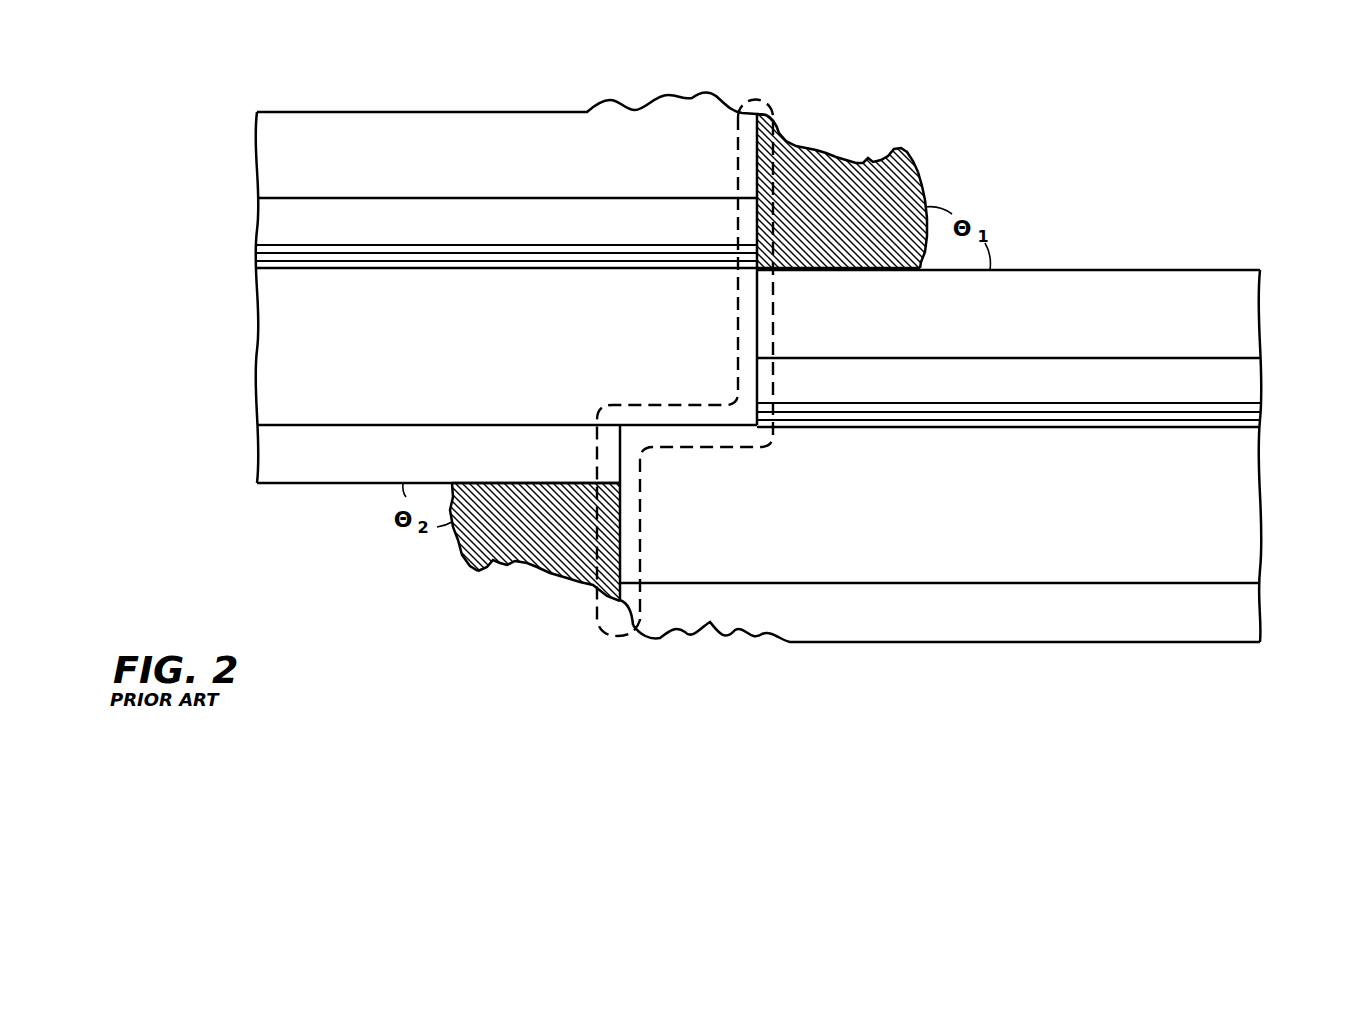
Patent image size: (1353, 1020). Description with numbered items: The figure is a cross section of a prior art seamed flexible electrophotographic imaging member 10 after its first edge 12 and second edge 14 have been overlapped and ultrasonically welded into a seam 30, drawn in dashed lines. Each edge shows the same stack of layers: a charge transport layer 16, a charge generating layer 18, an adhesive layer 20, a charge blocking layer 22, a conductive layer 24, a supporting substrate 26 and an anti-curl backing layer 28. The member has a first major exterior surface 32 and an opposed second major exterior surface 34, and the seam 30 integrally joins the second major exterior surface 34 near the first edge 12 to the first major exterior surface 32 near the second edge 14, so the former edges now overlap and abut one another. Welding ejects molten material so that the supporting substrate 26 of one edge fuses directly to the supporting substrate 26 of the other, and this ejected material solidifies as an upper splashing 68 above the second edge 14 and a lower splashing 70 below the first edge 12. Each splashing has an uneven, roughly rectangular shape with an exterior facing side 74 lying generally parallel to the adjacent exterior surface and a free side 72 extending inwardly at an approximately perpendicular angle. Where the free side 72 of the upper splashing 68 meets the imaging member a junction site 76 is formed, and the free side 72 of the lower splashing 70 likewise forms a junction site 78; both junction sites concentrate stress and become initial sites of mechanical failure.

The flexible electrophotographic imaging member 10 is at (1143, 181).
The first edge 12 is at (699, 80).
The second edge 14 is at (707, 647).
The charge transport layer 16 is at (275, 147).
The charge generating layer 18 is at (268, 212).
The adhesive layer 20 is at (258, 246).
The charge blocking layer 22 is at (258, 256).
The conductive layer 24 is at (258, 263).
The supporting substrate 26 is at (278, 345).
The anti-curl backing layer 28 is at (278, 435).
The seam 30 is at (613, 640).
The first major exterior surface 32 is at (302, 483).
The second major exterior surface 34 is at (470, 112).
The upper splashing 68 is at (938, 106).
The lower splashing 70 is at (486, 587).
The free side 72 is at (920, 168).
The exterior facing side 74 is at (832, 155).
The junction site 76 is at (920, 268).
The junction site 78 is at (452, 484).